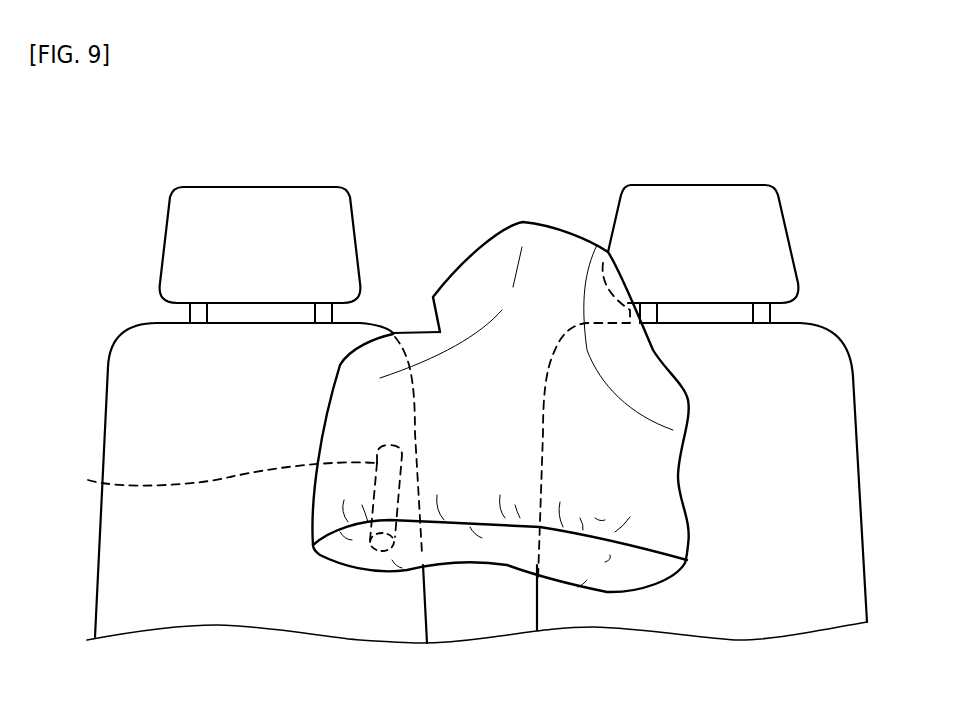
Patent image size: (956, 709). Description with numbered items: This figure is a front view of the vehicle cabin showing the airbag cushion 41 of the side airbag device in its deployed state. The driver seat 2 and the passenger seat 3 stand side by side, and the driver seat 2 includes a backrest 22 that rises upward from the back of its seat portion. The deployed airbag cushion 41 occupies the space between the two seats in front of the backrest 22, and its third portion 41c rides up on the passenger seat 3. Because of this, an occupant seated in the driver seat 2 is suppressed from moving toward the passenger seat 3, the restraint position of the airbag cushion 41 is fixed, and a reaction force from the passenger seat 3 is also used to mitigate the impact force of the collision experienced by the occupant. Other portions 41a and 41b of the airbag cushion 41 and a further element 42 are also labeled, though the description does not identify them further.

The driver seat 2 is at (294, 168).
The passenger seat 3 is at (743, 167).
The backrest 22 is at (125, 337).
The airbag cushion 41 is at (546, 209).
The first side portion of airbag 41a is at (331, 581).
The central portion of airbag 41b is at (479, 591).
The third portion 41c is at (656, 602).
The strap / tether 42 is at (224, 498).